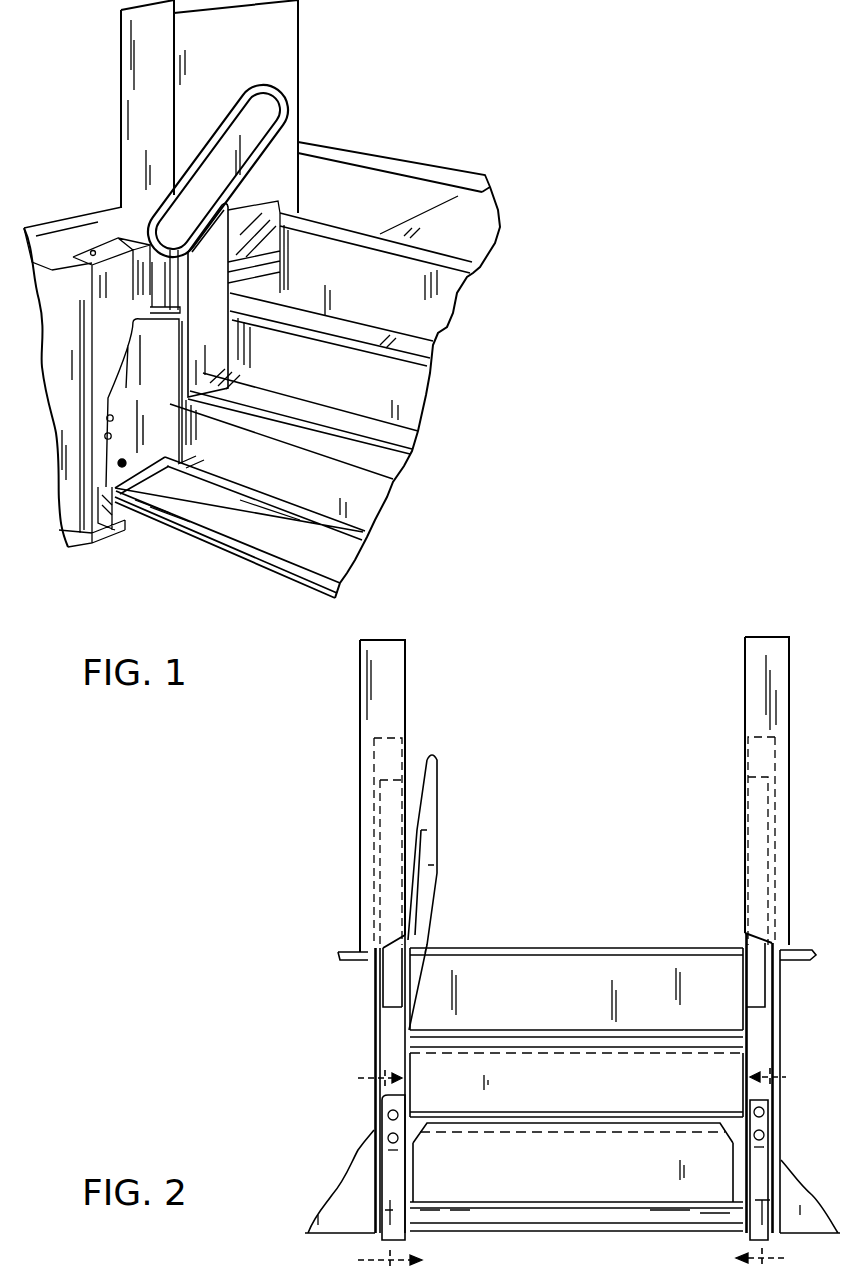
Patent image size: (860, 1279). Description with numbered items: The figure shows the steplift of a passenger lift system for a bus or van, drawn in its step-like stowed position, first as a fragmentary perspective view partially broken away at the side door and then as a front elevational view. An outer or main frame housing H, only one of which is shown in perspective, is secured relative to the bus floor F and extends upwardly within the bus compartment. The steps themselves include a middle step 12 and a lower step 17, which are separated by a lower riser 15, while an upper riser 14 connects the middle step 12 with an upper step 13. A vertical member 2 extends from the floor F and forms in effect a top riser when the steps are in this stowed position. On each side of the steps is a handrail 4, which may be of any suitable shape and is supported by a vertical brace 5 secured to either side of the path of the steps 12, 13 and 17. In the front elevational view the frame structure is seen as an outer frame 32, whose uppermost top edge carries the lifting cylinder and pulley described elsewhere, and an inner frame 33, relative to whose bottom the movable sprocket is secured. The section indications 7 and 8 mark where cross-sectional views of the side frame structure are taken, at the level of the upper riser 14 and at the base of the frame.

In FIG. 1, the main frame housing H is at (209, 106).
In FIG. 2, the main frame housing H is at (383, 640).
In FIG. 1, the handrail 4 is at (272, 100).
In FIG. 2, the handrail 4 is at (437, 802).
In FIG. 1, the vertical brace 5 is at (216, 320).
In FIG. 1, the bus floor F is at (391, 210).
In FIG. 1, the vertical member 2 is at (386, 300).
In FIG. 2, the vertical member 2 is at (588, 999).
In FIG. 1, the upper step 13 is at (362, 342).
In FIG. 1, the upper riser 14 is at (342, 394).
In FIG. 2, the upper riser 14 is at (591, 1095).
In FIG. 1, the middle step 12 is at (324, 432).
In FIG. 1, the lower riser 15 is at (299, 491).
In FIG. 2, the lower riser 15 is at (591, 1179).
In FIG. 1, the lower step 17 is at (269, 536).
In FIG. 2, the outer frame 32 is at (742, 703).
In FIG. 2, the inner frame 33 is at (742, 755).
In FIG. 2, the section line 7 is at (381, 1171).
In FIG. 2, the section line 8 is at (769, 1169).